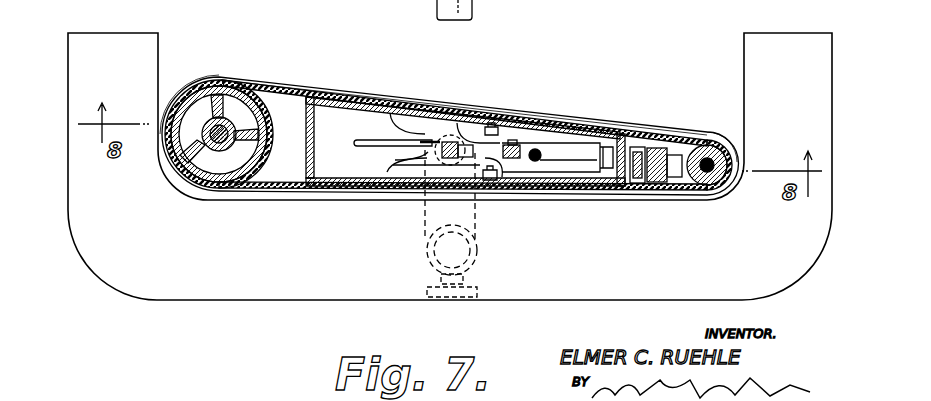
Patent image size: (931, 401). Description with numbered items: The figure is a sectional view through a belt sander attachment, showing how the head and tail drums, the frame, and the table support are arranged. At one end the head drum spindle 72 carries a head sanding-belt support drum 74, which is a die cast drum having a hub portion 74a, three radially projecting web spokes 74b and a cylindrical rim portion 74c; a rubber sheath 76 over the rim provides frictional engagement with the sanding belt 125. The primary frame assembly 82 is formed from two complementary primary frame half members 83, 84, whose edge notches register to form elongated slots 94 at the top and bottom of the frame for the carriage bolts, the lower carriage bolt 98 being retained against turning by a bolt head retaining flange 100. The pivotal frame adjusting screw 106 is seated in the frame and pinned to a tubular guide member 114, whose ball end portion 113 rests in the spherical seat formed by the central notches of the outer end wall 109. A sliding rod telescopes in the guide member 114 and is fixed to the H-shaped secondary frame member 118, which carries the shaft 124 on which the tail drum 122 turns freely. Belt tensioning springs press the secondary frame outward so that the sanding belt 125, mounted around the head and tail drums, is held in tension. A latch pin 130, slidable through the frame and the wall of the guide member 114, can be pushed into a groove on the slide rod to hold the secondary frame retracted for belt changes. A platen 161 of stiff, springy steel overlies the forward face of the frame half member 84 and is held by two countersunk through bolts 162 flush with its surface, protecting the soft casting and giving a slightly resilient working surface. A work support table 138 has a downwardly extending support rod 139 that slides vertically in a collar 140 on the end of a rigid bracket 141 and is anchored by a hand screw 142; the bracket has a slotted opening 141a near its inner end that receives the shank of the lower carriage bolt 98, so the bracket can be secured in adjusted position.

The head drum spindle 72 is at (217, 114).
The head sanding-belt support drum 74 is at (217, 86).
The hub portion 74a is at (208, 84).
The web spokes 74b is at (240, 88).
The cylindrical rim portion 74c is at (198, 86).
The rubber sheath 76 is at (228, 88).
The primary frame assembly 82 is at (300, 153).
The primary frame half member 83 is at (347, 120).
The primary frame half member 84 is at (356, 186).
The elongated slots 94 is at (384, 139).
The carriage bolt 98 is at (436, 140).
The bolt head retaining flange 100 is at (404, 170).
The pivotal frame adjusting screw 106 is at (525, 143).
The outer end wall 109 is at (635, 136).
The ball end portion 113 is at (636, 185).
The tubular guide member 114 is at (586, 170).
The H-shaped secondary frame member 118 is at (677, 148).
The tail drum 122 is at (733, 148).
The shaft 124 is at (715, 185).
The sanding belt 125 is at (294, 86).
The latch pin 130 is at (540, 151).
The work support table 138 is at (222, 300).
The support rod 139 is at (498, 2).
The collar 140 is at (477, 250).
The bracket 141 is at (478, 213).
The slotted opening 141a is at (457, 124).
The hand screw 142 is at (477, 291).
The platen 161 is at (396, 112).
The through bolts 162 is at (490, 126).